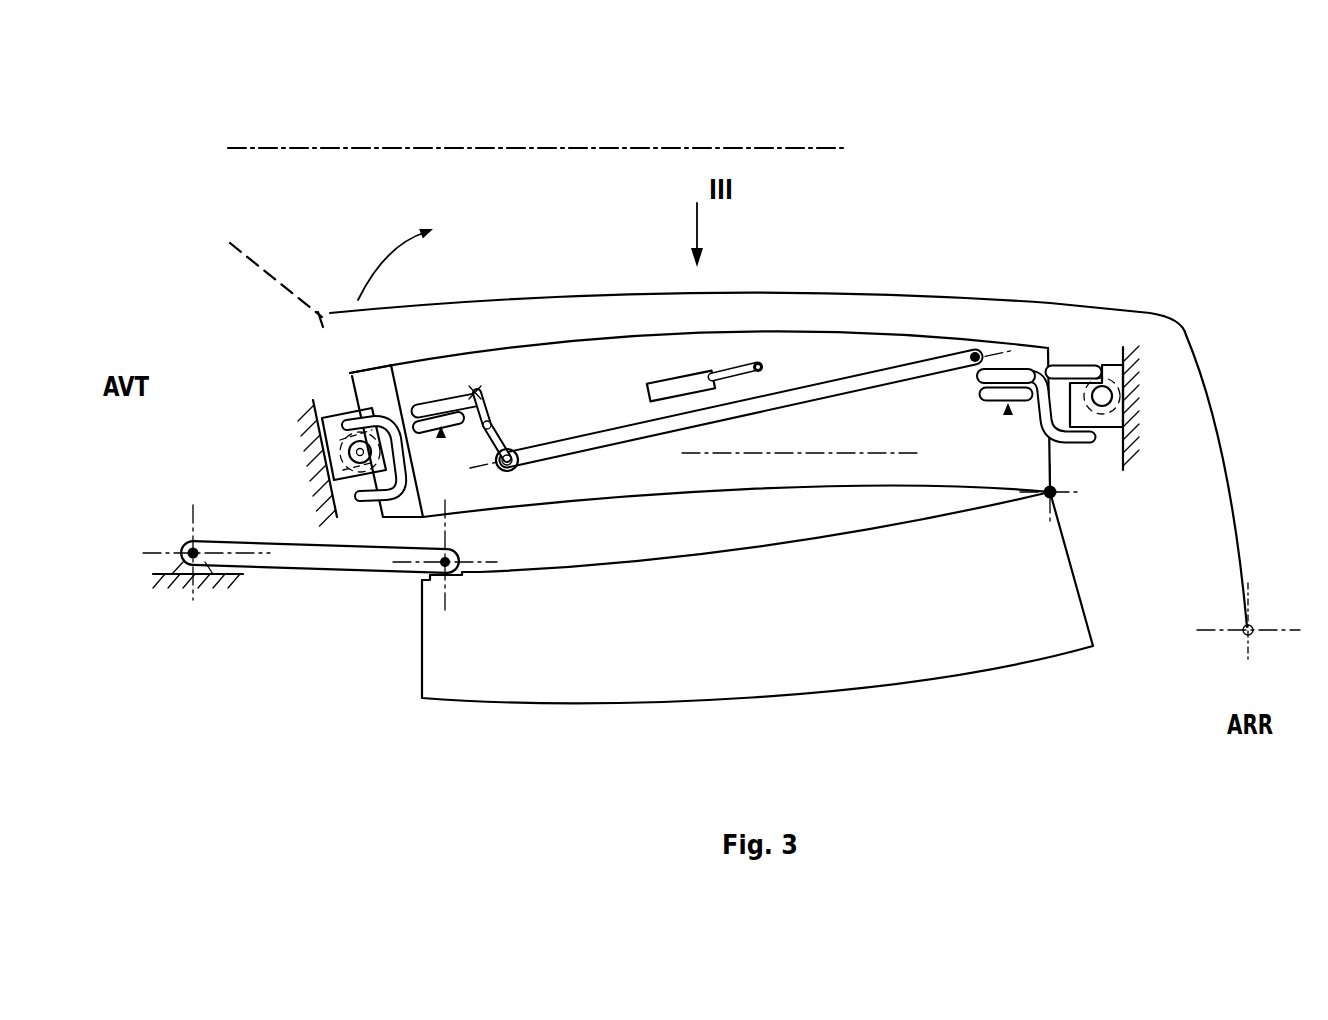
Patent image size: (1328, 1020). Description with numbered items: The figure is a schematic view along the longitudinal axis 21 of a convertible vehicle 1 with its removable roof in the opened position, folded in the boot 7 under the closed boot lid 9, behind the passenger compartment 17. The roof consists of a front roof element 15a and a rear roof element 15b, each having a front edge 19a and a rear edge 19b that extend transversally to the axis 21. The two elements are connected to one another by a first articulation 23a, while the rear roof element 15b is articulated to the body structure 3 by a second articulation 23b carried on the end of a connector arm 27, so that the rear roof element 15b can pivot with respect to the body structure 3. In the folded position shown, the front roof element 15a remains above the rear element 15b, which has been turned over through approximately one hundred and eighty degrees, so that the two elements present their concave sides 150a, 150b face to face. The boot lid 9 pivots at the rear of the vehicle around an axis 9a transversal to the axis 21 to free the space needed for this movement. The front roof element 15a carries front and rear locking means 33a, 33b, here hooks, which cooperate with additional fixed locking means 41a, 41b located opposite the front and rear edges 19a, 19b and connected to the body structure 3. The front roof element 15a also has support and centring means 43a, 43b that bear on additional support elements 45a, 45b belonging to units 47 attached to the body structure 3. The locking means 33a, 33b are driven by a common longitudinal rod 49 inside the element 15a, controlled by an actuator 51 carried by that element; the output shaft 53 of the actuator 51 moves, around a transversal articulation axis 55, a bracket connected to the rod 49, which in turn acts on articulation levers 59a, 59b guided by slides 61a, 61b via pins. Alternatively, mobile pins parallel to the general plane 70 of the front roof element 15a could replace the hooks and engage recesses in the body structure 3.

The vehicle 1 is at (776, 281).
The body structure 3 is at (168, 566).
The boot 7 is at (699, 339).
The boot lid 9 is at (515, 298).
The axis 9a is at (1251, 626).
The front roof element 15a is at (877, 348).
The rear roof element 15b is at (298, 290).
The passenger compartment 17 is at (108, 262).
The front edge 19a is at (388, 372).
The rear edge 19b is at (1069, 370).
The longitudinal axis 21 is at (537, 146).
The first articulation 23a is at (1057, 498).
The second articulation 23b is at (208, 598).
The connector arm 27 is at (305, 556).
The front locking means 33a is at (394, 494).
The rear locking means 33b is at (1078, 455).
The additional fixed locking means 41a is at (357, 440).
The additional fixed locking means 41b is at (1103, 385).
The support and/or centring means 43a is at (373, 414).
The support and/or centring means 43b is at (1080, 364).
The additional support element 45a is at (313, 447).
The additional support element 45b is at (1127, 390).
The units 47 is at (315, 487).
The longitudinal rod 49 is at (613, 430).
The actuator 51 is at (700, 372).
The output shaft 53 is at (735, 370).
The transversal articulation axis 55 is at (765, 368).
The articulation lever 59a is at (450, 393).
The articulation lever 59b is at (986, 379).
The slide 61a is at (443, 440).
The slide 61b is at (1008, 416).
The general plane 70 is at (800, 447).
The concave side 150a is at (722, 493).
The concave side 150b is at (659, 560).